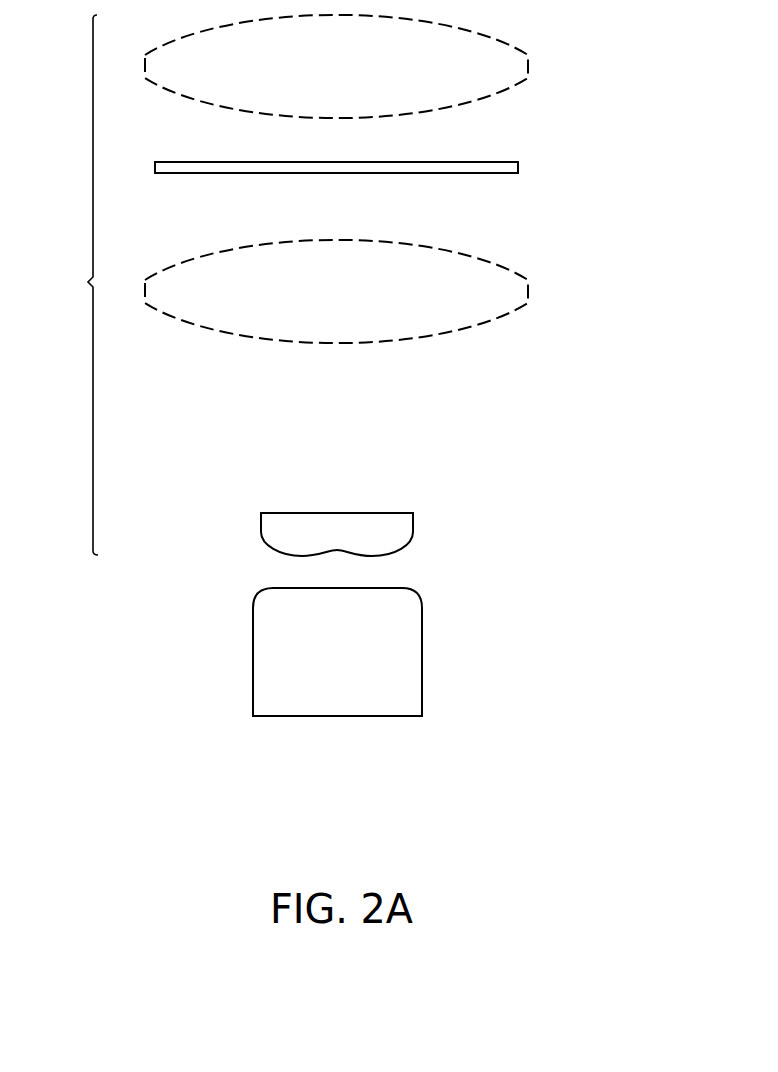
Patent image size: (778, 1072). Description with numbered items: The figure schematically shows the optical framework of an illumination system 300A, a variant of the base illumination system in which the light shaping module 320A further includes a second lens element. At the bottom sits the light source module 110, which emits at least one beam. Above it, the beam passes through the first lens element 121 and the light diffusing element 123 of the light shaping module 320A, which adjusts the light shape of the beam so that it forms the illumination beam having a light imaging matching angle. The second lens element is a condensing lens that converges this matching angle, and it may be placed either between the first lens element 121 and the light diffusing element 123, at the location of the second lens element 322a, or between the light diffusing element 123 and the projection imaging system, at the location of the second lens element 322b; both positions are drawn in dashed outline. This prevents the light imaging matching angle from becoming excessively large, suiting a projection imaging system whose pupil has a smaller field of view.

The illumination system 300A is at (616, 777).
The light shaping module 320A is at (62, 285).
The second lens element 322b is at (531, 67).
The second lens element 322a is at (531, 291).
The light diffusing element 123 is at (520, 167).
The first lens element 121 is at (415, 519).
The light source module 110 is at (424, 657).